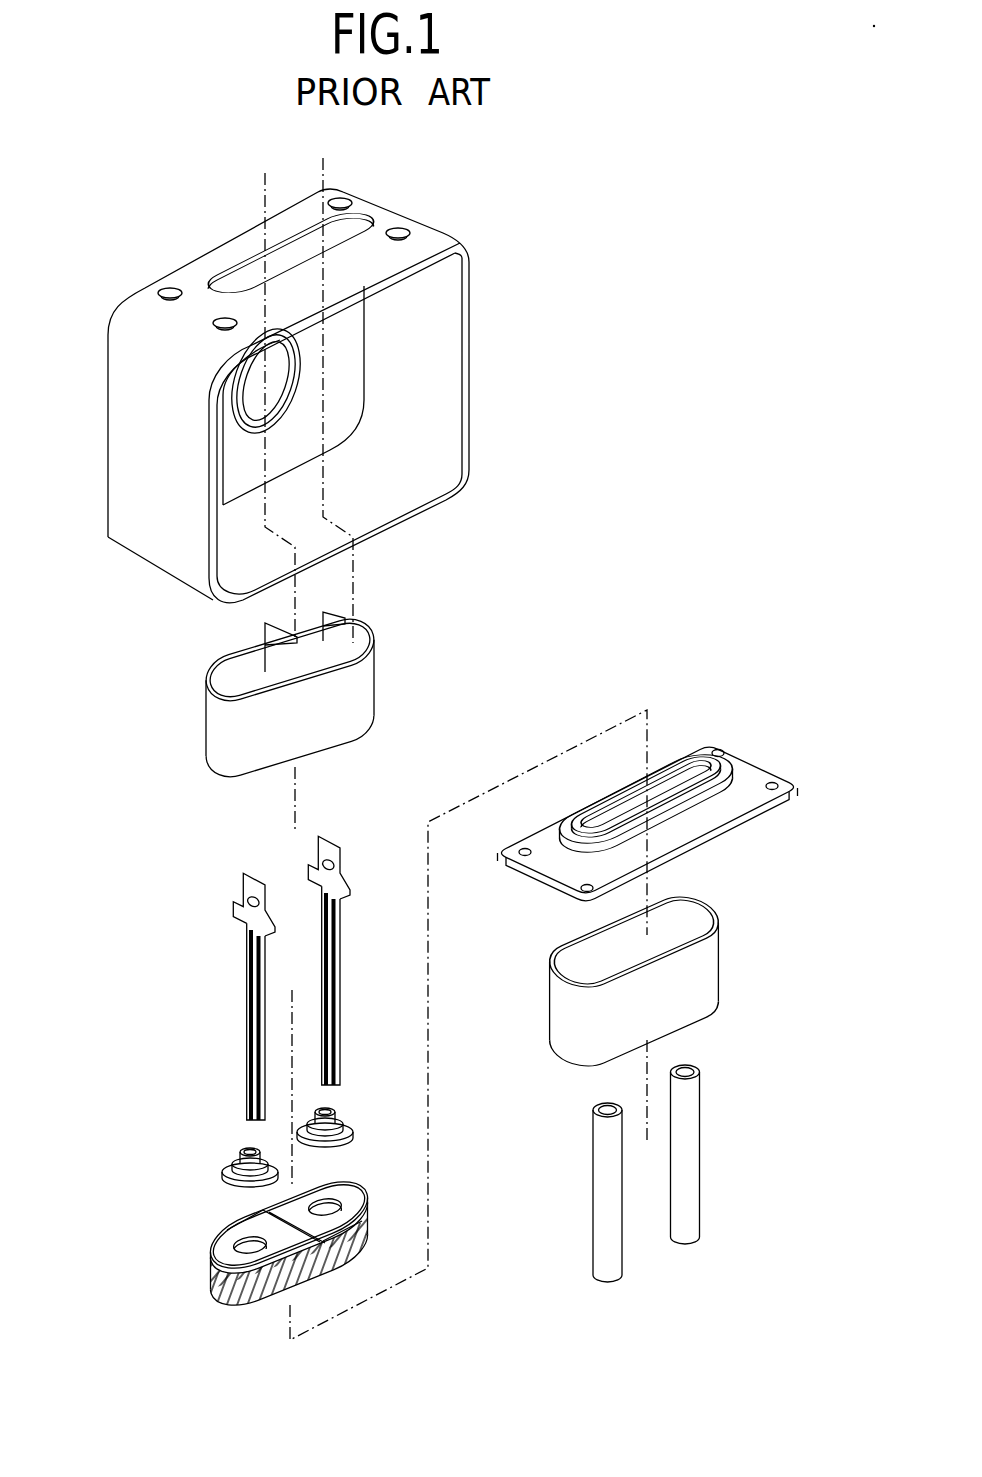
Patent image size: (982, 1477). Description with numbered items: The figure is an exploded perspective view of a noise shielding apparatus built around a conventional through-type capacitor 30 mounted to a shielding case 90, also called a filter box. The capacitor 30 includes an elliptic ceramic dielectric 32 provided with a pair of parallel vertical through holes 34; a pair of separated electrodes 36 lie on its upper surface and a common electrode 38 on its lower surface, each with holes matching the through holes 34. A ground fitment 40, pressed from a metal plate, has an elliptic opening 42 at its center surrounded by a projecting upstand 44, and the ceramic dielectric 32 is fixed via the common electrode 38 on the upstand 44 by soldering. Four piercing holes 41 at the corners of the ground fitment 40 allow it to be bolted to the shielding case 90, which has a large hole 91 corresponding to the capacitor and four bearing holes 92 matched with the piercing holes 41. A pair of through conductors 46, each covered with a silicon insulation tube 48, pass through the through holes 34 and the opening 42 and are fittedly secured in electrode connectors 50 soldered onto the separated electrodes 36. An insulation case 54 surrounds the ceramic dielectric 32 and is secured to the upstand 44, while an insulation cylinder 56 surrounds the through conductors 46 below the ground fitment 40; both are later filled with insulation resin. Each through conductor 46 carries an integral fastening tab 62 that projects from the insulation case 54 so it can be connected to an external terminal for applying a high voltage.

The through-type capacitor 30 is at (410, 634).
The ceramic dielectric 32 is at (265, 1251).
The through holes 34 is at (337, 1197).
The separated electrodes 36 is at (358, 1203).
The common electrode 38 is at (257, 1307).
The ground fitment 40 is at (654, 823).
The piercing holes 41 is at (770, 785).
The opening 42 is at (638, 805).
The upstand 44 is at (575, 850).
The through conductors 46 is at (247, 1030).
The insulation tube 48 is at (602, 1195).
The electrode connectors 50 is at (230, 1163).
The insulation case 54 is at (218, 722).
The insulation cylinder 56 is at (702, 978).
The fastening tab 62 is at (243, 883).
The shielding case 90 is at (246, 384).
The large hole 91 is at (357, 228).
The bearing holes 92 is at (172, 290).